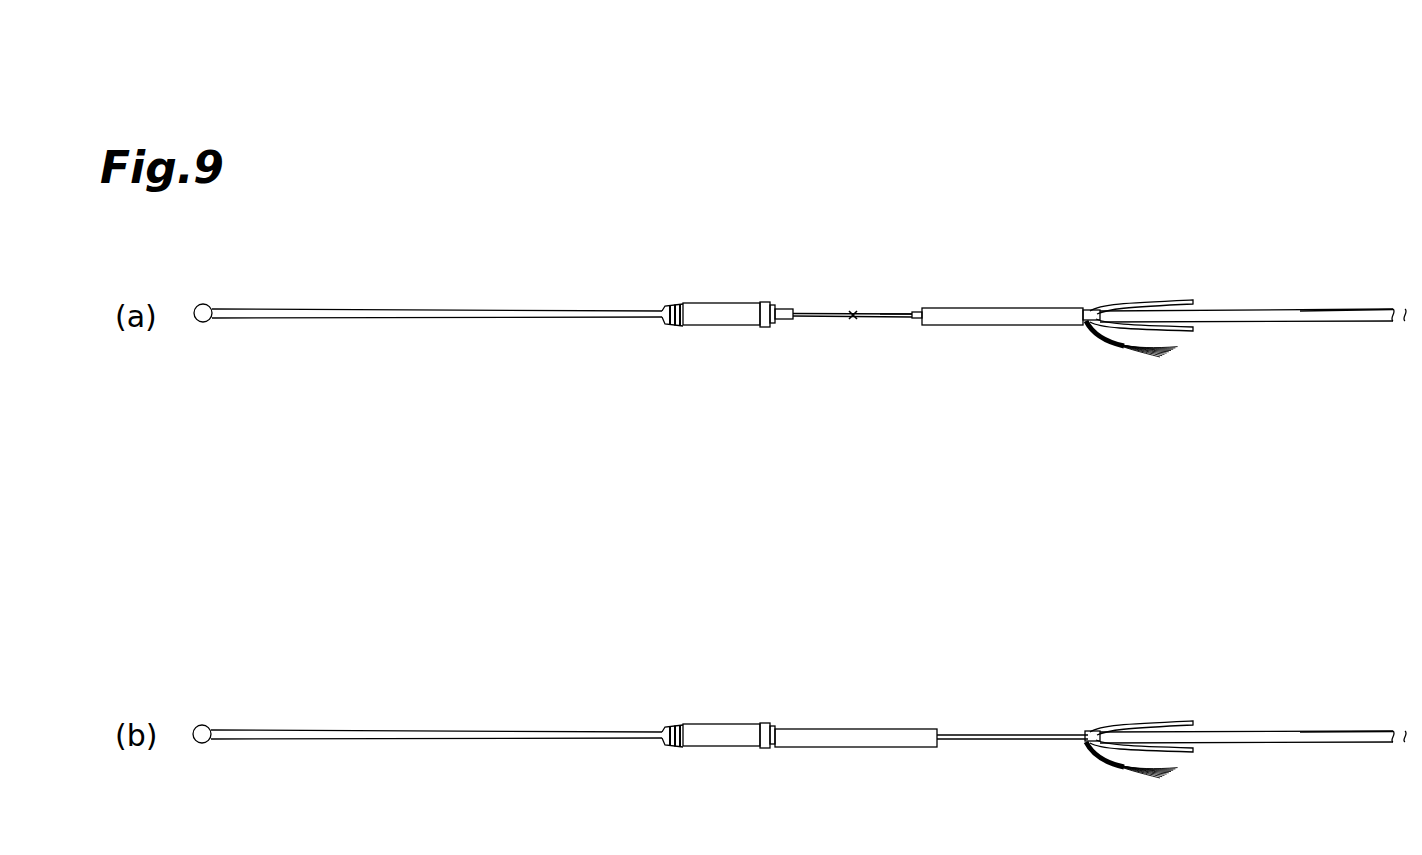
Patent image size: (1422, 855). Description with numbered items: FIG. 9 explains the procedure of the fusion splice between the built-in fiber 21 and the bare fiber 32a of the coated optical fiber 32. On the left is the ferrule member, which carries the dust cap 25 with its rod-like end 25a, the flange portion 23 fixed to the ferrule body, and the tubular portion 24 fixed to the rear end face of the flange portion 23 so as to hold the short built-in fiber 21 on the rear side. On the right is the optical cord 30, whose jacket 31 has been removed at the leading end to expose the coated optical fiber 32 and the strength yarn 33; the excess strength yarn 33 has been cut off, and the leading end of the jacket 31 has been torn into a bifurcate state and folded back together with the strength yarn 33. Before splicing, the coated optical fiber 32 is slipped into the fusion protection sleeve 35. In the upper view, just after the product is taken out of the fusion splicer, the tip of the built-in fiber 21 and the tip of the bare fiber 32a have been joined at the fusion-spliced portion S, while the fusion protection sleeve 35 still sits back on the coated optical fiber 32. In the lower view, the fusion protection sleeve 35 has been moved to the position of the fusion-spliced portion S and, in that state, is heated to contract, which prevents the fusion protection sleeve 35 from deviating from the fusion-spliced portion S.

The rod of handle portion 25a is at (498, 311).
The dust cap 25 is at (728, 298).
The flange portion 23 is at (763, 328).
The tubular portion 24 is at (784, 307).
The built-in fiber 21 is at (818, 320).
The fusion-spliced portion S is at (854, 311).
The coated optical fiber 32 is at (914, 311).
The bare fiber 32a is at (893, 320).
The fusion protection sleeve 35 is at (1030, 308).
The strength yarn 33 is at (1153, 353).
The jacket 31 is at (1238, 312).
The optical cord 30 is at (1334, 308).